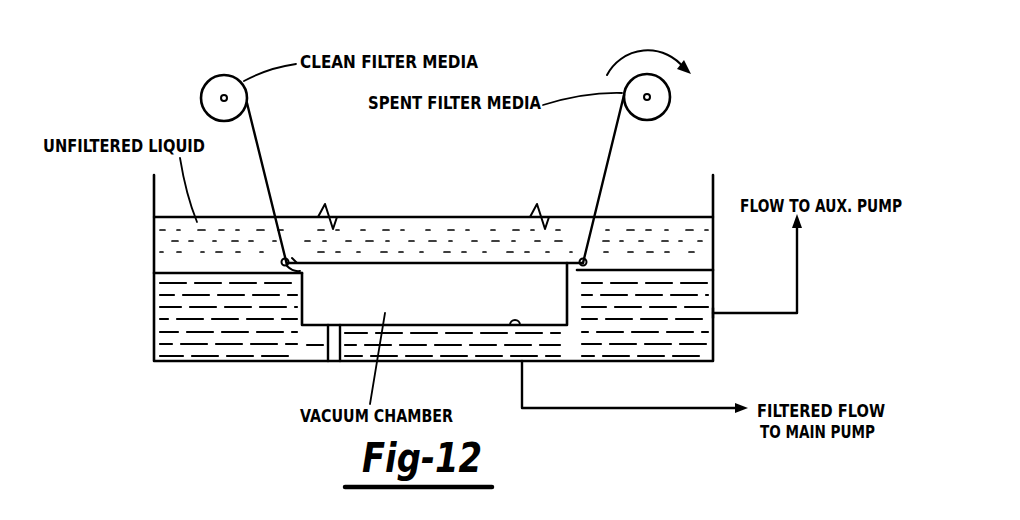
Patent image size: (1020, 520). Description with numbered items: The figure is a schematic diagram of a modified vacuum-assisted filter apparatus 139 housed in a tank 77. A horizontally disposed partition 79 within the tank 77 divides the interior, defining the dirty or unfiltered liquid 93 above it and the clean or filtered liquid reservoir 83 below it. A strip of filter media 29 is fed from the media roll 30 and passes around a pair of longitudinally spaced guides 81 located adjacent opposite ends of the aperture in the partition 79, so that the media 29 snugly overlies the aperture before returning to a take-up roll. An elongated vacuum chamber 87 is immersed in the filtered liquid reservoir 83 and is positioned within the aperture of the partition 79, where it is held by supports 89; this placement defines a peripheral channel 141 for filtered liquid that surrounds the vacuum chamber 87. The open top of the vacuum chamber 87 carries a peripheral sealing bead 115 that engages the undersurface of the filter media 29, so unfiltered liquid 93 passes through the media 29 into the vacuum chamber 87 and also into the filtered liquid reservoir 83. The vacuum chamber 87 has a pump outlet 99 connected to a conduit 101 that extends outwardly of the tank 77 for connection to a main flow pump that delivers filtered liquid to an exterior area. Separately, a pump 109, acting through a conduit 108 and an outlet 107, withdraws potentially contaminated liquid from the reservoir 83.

The filter media 29 is at (266, 170).
The media roll 30 is at (230, 84).
The tank 77 is at (713, 330).
The partition 79 is at (172, 268).
The guides 81 is at (272, 265).
The filtered liquid reservoir 83 is at (172, 303).
The vacuum chamber 87 is at (425, 331).
The supports 89 is at (326, 346).
The unfiltered liquid 93 is at (172, 241).
The pump outlet 99 is at (512, 331).
The conduit 101 is at (690, 408).
The outlet 107 is at (709, 313).
The conduit 108 is at (758, 311).
The pump 109 is at (876, 235).
The sealing bead 115 is at (300, 272).
The vacuum-assisted filter apparatus 139 is at (148, 356).
The peripheral channel 141 is at (297, 262).